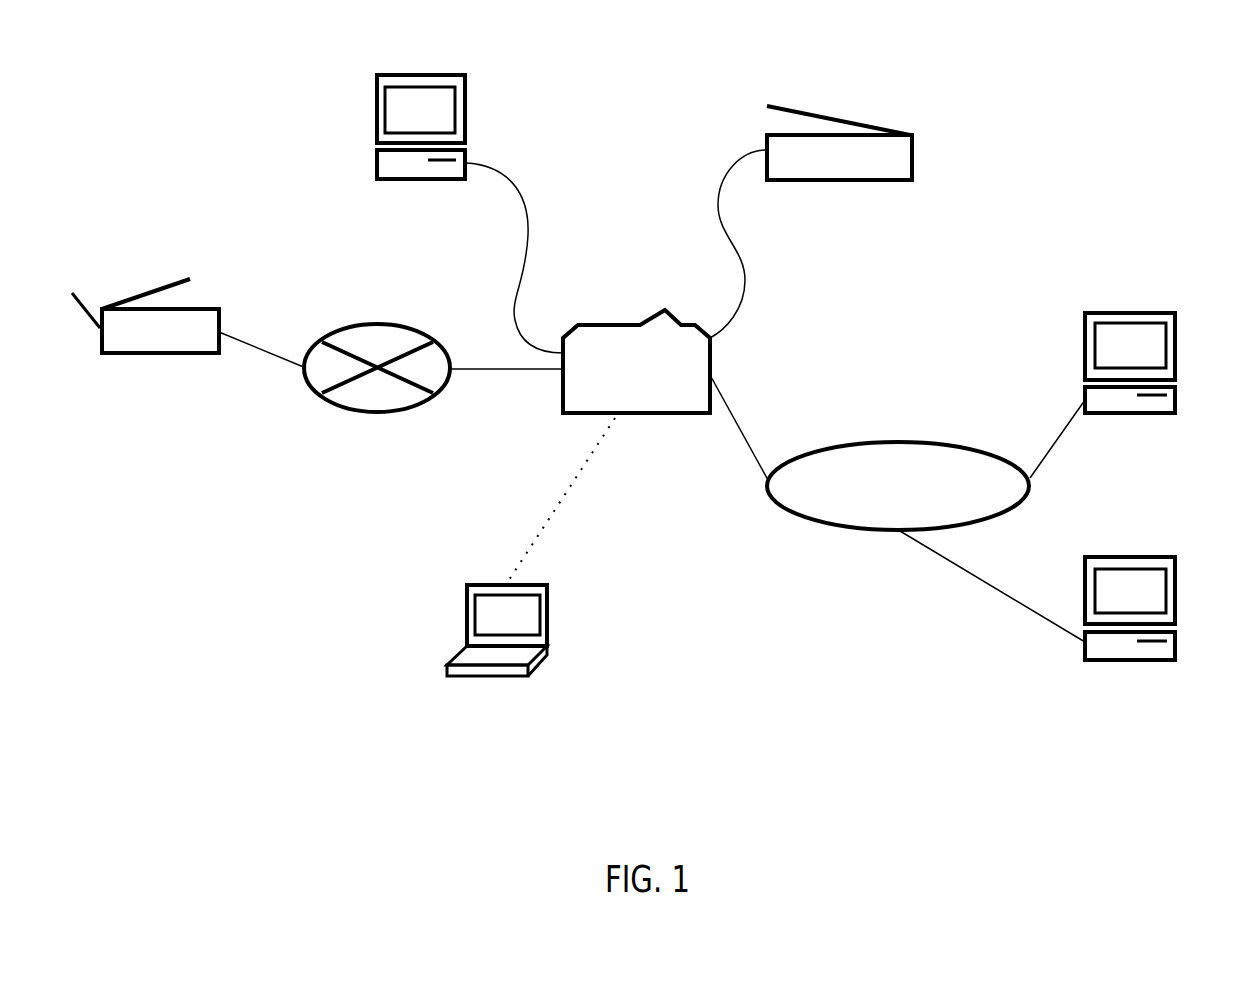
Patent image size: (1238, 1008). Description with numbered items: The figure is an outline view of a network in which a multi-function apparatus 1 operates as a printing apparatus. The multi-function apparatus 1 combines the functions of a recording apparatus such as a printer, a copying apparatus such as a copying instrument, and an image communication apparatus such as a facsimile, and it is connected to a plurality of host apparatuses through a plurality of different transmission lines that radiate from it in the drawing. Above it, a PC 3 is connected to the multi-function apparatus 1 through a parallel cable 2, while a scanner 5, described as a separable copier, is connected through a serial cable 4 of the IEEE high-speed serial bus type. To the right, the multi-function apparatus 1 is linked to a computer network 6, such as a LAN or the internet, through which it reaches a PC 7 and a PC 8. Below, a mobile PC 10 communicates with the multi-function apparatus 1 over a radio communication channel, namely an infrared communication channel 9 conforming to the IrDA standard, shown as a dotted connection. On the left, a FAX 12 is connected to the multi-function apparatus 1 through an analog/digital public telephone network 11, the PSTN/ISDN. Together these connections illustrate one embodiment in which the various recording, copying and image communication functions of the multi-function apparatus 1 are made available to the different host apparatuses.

The multi-function apparatus 1 is at (600, 321).
The parallel cable 2 is at (527, 234).
The PC 3 is at (466, 131).
The serial cable 4 is at (745, 237).
The scanner 5 is at (913, 148).
The computer network 6 is at (920, 441).
The PC 7 is at (1177, 645).
The PC 8 is at (1177, 398).
The infrared communication channel 9 is at (547, 523).
The mobile PC 10 is at (547, 630).
The public telephone network 11 is at (363, 412).
The FAX 12 is at (220, 322).